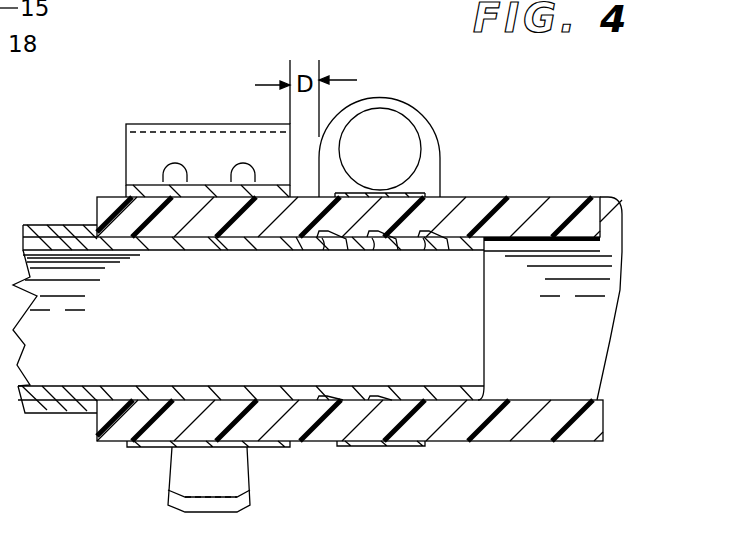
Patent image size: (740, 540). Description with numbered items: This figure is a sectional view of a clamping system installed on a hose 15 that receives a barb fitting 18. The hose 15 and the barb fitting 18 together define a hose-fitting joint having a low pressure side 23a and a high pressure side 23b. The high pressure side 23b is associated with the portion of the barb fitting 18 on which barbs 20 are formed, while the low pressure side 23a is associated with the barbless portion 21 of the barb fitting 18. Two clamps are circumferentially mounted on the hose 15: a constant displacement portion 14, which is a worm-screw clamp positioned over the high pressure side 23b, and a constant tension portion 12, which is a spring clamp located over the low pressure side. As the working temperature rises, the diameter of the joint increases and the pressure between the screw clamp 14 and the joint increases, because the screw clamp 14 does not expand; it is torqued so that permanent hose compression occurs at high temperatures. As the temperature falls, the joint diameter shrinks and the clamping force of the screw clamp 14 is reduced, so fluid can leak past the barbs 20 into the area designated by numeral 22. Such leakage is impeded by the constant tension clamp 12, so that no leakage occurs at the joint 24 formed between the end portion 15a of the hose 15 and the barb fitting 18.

The constant tension portion 12 is at (175, 122).
The constant displacement portion 14 is at (395, 100).
The hose 15 is at (526, 197).
The end portion 15a is at (92, 440).
The barb fitting 18 is at (0, 194).
The barbs 20 is at (323, 238).
The barbless portion 21 is at (163, 252).
The leakage area 22 is at (296, 252).
The low pressure side 23a is at (220, 252).
The high pressure side 23b is at (363, 238).
The joint 24 is at (93, 415).